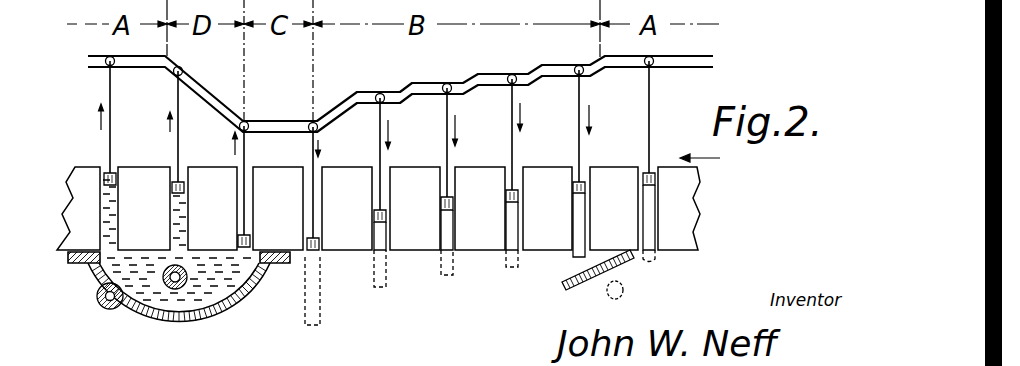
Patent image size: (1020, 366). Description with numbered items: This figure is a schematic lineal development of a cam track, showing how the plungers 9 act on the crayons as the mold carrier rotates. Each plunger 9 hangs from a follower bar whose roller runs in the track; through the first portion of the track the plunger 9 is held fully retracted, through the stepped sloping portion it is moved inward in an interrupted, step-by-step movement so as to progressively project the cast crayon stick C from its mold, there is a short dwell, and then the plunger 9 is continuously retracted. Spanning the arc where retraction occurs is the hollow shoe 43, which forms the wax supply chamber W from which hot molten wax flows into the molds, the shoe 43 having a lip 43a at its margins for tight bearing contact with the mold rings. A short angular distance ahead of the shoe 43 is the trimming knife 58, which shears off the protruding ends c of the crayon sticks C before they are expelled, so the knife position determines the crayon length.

The plunger 9 is at (647, 135).
The hollow shoe 43 is at (181, 323).
The lip 43a is at (80, 265).
The trimming knife 58 is at (562, 281).
The wax supply chamber W is at (226, 293).
The sticks of crayon C is at (321, 305).
The protruding ends of the crayon sticks c is at (624, 290).